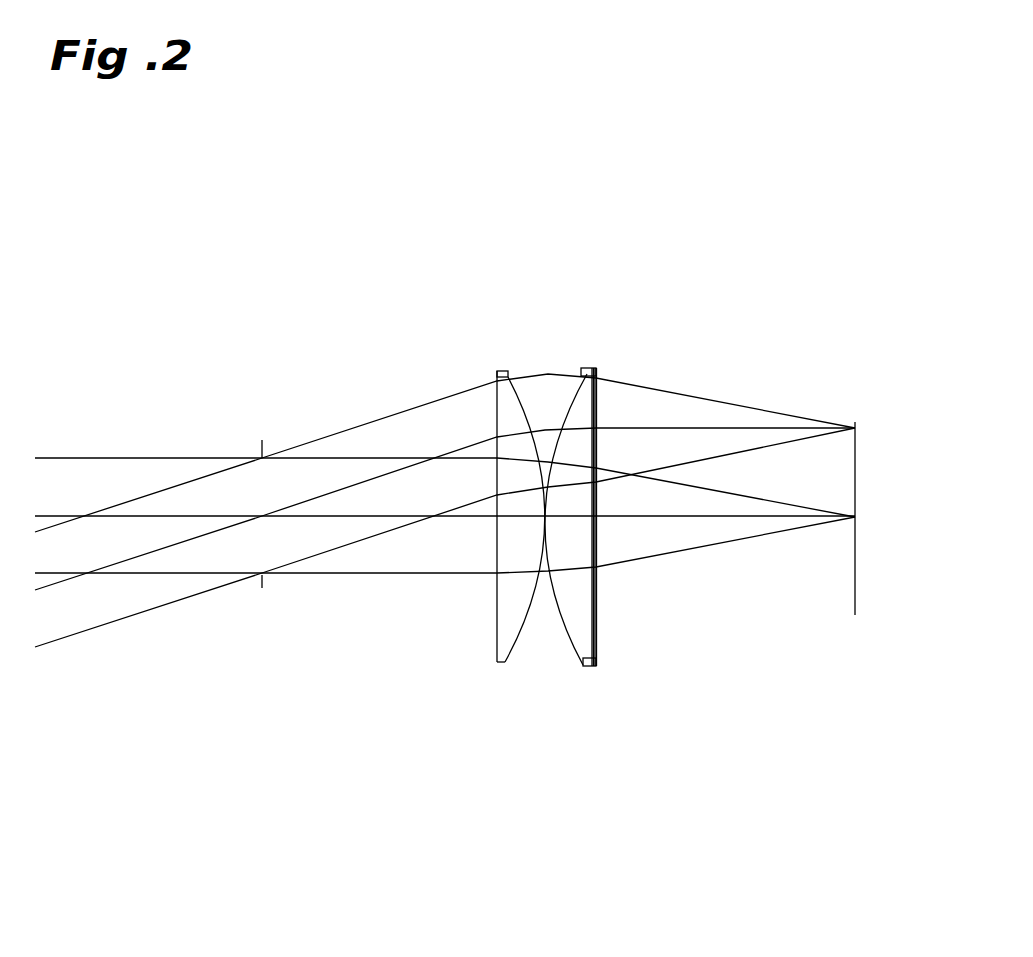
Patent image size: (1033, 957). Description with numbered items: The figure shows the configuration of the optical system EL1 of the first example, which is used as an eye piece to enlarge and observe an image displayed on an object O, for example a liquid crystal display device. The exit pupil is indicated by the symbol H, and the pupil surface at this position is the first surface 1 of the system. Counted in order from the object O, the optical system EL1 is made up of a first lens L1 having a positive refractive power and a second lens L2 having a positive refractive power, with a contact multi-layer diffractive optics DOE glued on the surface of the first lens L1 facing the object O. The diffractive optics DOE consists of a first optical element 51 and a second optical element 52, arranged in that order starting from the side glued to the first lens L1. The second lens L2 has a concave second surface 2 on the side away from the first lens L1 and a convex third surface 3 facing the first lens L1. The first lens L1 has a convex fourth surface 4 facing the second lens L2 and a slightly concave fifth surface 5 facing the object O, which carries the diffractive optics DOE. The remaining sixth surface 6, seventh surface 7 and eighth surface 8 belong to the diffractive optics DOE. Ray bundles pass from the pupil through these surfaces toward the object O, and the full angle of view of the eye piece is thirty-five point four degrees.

The optical system (eye piece) EL1 is at (383, 214).
The exit pupil H is at (263, 447).
The first surface (pupil surface) 1 is at (263, 587).
The second lens L2 is at (501, 506).
The second surface 2 is at (496, 650).
The third surface 3 is at (509, 643).
The first lens L1 is at (566, 506).
The fourth surface 4 is at (569, 642).
The fifth surface 5 is at (587, 640).
The contact multi-layer diffractive optics DOE is at (622, 489).
The first optical element 51 is at (601, 515).
The second optical element 52 is at (629, 515).
The sixth surface 6 is at (592, 652).
The seventh surface 7 is at (594, 665).
The eighth surface 8 is at (594, 640).
The object O is at (857, 440).